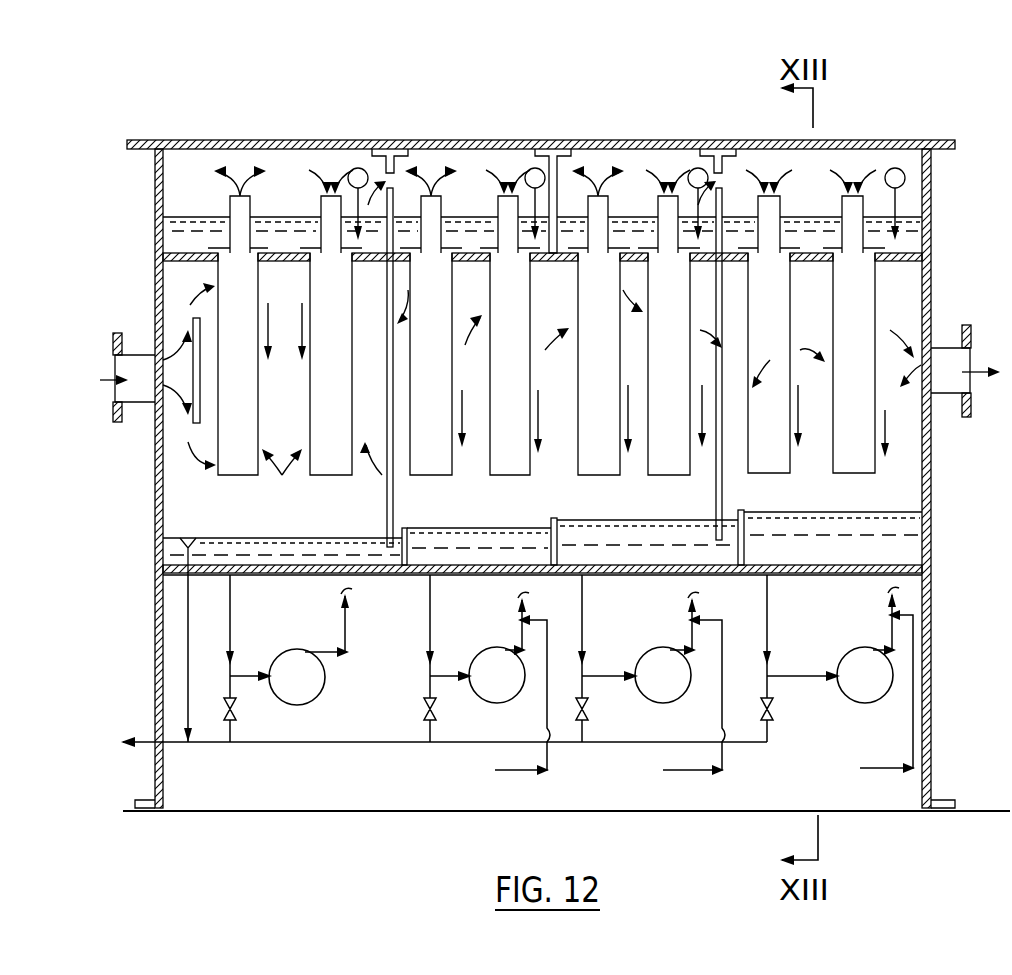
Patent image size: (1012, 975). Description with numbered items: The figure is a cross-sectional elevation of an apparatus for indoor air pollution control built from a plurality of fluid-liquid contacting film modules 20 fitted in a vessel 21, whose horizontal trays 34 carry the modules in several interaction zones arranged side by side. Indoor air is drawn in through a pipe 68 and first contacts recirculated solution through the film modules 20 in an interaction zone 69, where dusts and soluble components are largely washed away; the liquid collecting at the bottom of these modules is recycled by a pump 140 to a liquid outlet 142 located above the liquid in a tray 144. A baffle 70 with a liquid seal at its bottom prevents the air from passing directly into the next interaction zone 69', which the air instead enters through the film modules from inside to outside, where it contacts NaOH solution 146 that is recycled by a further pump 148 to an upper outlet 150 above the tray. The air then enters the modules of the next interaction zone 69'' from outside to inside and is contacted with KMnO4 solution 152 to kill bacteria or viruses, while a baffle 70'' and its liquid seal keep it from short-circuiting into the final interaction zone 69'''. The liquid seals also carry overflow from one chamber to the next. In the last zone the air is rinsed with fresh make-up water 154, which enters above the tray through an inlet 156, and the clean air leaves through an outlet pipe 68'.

The module 20 is at (228, 478).
The vessel 21 is at (929, 492).
The tray 34 is at (912, 253).
The pipe 68 is at (150, 390).
The outlet pipe 68' is at (965, 389).
The interaction zone 69 is at (282, 540).
The interaction zone 69' is at (476, 534).
The interaction zone 69'' is at (644, 528).
The interaction zone 69''' is at (830, 524).
The baffle 70 is at (361, 367).
The baffle 70'' is at (692, 364).
The pump 140 is at (320, 683).
The liquid outlet 142 is at (356, 167).
The tray 144 is at (180, 253).
The NaOH solution 146 is at (472, 215).
The further pump 148 is at (497, 700).
The upper outlet 150 is at (533, 167).
The KMnO4 solution 152 is at (637, 215).
The fresh make-up water 154 is at (910, 216).
The inlet 156 is at (895, 167).